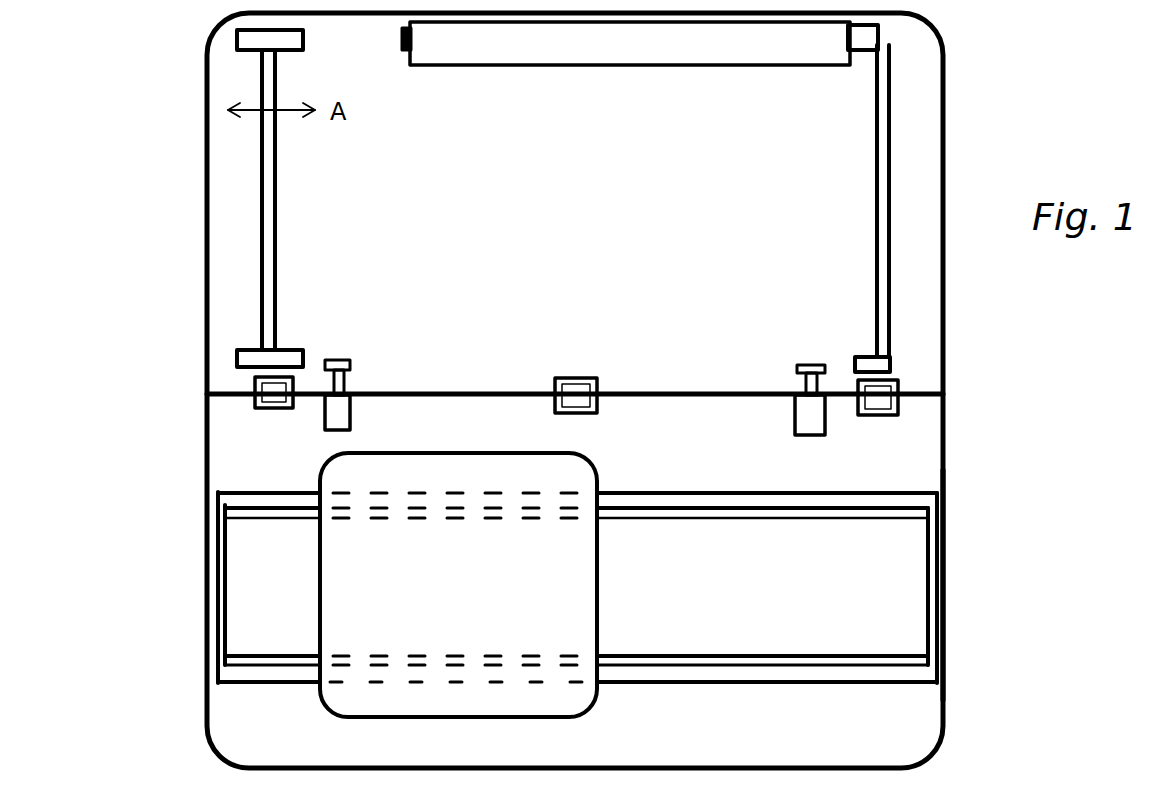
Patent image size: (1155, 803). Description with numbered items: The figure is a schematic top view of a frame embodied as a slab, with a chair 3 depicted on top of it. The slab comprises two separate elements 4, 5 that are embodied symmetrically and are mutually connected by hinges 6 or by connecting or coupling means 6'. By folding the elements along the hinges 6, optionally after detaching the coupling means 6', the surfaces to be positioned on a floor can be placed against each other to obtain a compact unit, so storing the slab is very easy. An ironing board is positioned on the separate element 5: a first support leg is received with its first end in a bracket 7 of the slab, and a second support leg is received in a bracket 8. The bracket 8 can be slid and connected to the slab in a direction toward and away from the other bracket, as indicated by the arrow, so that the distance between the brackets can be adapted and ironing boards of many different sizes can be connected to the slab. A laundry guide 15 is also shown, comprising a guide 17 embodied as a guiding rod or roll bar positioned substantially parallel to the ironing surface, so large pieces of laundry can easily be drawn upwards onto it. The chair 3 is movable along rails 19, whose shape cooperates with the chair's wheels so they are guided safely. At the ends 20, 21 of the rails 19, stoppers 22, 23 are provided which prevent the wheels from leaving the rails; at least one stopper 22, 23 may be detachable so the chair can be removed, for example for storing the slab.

The chair 3 is at (585, 700).
The separate element 4 is at (218, 455).
The separate element 5 is at (218, 170).
The hinges 6 is at (575, 402).
The coupling means 6' is at (575, 398).
The bracket 7 is at (876, 85).
The bracket 8 is at (266, 335).
The laundry guide 15 is at (458, 78).
The guide 17 is at (520, 55).
The rails 19 is at (722, 518).
The end of rail 20 is at (920, 482).
The end of rail 21 is at (207, 505).
The stopper 22 is at (937, 572).
The stopper 23 is at (218, 607).